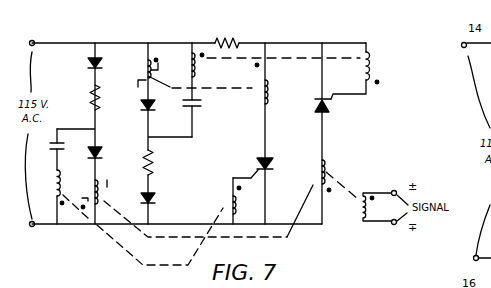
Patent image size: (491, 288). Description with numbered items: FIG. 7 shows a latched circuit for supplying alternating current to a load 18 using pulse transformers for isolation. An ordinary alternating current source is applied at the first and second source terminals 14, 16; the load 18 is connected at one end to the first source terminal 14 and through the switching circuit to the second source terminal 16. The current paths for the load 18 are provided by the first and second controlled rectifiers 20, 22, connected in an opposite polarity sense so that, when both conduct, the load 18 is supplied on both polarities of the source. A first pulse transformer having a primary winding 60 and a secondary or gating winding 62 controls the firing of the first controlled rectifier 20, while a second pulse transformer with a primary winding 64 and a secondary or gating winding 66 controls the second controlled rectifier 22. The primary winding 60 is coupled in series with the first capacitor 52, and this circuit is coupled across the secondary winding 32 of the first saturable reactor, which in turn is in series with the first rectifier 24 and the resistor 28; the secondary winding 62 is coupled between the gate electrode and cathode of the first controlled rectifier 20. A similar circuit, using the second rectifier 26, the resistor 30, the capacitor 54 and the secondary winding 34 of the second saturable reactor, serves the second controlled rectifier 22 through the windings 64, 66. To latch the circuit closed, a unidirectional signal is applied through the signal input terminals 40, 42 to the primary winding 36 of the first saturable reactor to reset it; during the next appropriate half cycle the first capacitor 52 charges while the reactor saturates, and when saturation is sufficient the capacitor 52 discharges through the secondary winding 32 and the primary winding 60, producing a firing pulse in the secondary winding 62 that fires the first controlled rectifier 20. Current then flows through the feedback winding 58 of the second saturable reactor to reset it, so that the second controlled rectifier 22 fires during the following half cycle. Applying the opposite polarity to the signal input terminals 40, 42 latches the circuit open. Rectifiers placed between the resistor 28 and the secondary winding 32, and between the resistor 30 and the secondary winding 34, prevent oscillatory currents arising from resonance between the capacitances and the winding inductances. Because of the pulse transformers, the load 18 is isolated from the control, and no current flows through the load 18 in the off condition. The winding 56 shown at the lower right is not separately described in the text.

The first source terminal 14 is at (31, 41).
The second source terminal 16 is at (31, 228).
The load 18 is at (241, 34).
The first controlled rectifier 20 is at (273, 163).
The second controlled rectifier 22 is at (333, 106).
The first rectifier 24 is at (100, 63).
The second rectifier 26 is at (157, 203).
The resistor 28 is at (91, 95).
The resistor 30 is at (156, 165).
The first secondary winding 32 is at (102, 194).
The second secondary winding 34 is at (138, 88).
The first primary winding 36 is at (357, 221).
The signal input terminal 40 is at (390, 184).
The signal input terminal 42 is at (391, 235).
The first capacitor 52 is at (66, 143).
The capacitor 54 is at (197, 107).
The transformer primary winding 56 is at (328, 164).
The feedback winding 58 is at (271, 90).
The primary winding 60 is at (59, 190).
The secondary winding 62 is at (239, 203).
The primary winding 64 is at (195, 73).
The secondary winding 66 is at (376, 63).